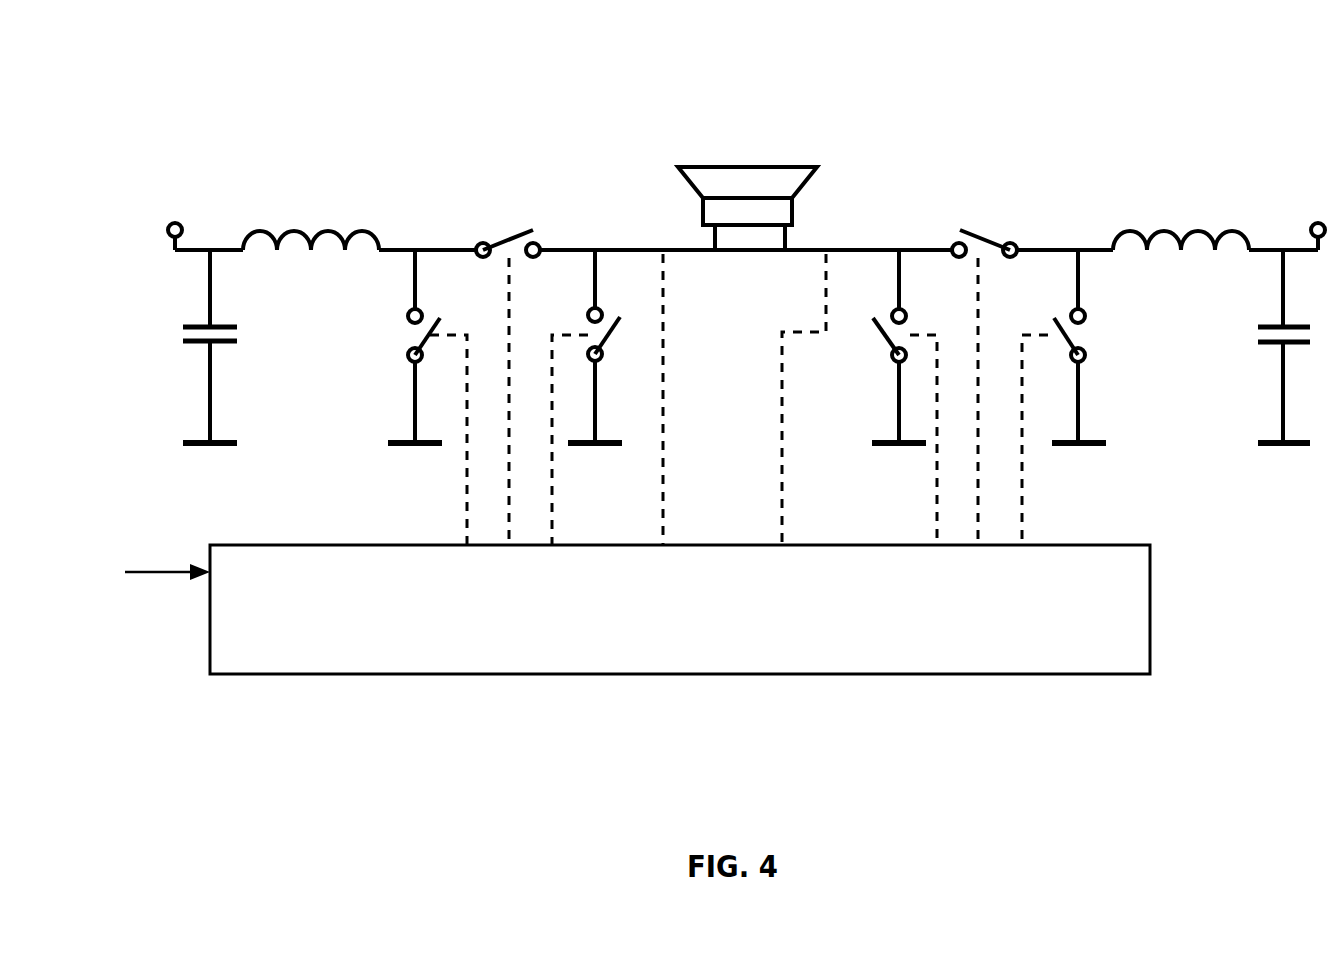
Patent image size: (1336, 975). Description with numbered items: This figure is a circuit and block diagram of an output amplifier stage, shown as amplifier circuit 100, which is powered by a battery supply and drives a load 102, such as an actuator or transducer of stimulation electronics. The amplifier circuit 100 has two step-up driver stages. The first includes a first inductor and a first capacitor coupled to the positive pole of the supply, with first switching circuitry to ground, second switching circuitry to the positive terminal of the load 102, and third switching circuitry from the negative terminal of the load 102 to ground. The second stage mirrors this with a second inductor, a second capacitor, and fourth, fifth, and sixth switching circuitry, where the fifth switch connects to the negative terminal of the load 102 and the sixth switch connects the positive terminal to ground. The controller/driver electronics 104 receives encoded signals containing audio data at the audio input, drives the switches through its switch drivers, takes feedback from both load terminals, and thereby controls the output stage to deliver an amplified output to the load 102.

The amplifier circuit 100 is at (326, 130).
The load 102 is at (682, 170).
The controller/driver electronics 104 is at (1145, 619).